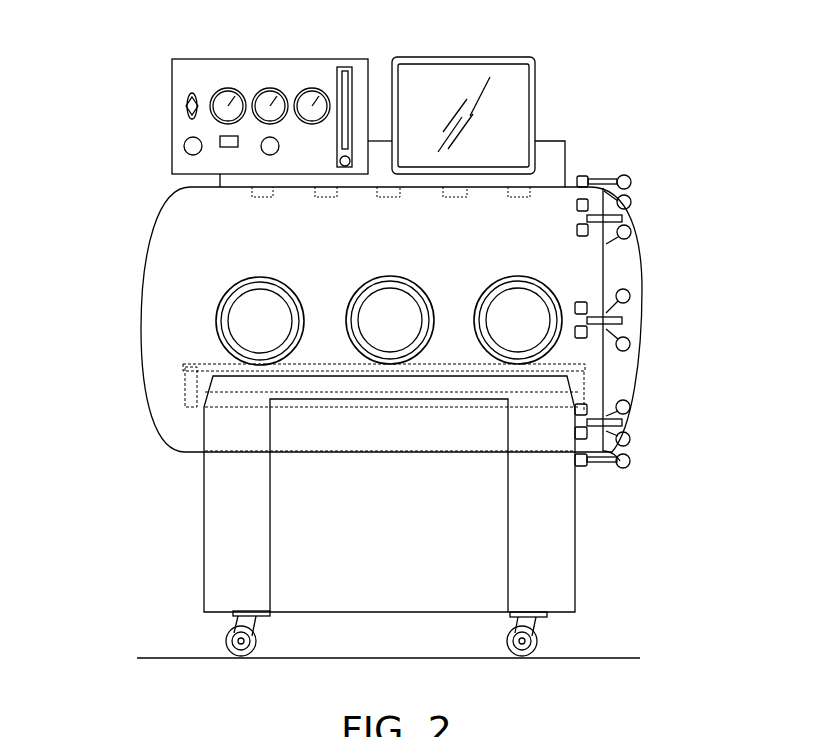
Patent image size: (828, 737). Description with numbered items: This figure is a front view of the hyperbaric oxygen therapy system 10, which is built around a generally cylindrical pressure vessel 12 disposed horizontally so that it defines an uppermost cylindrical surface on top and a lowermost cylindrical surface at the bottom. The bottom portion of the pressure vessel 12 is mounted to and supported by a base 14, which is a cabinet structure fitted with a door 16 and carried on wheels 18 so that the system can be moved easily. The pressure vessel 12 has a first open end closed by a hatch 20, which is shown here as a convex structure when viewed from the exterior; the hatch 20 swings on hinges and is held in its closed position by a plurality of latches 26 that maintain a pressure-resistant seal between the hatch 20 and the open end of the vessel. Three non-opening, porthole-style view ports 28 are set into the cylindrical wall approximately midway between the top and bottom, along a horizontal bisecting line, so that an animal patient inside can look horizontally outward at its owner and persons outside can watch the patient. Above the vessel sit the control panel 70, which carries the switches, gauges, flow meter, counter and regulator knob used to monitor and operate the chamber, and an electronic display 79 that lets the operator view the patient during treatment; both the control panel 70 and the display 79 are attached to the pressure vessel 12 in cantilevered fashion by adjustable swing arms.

The hyperbaric oxygen therapy system 10 is at (100, 89).
The pressure vessel 12 is at (140, 358).
The base 14 is at (575, 560).
The door 16 is at (404, 552).
The wheels 18 is at (228, 654).
The hatch 20 is at (642, 257).
The latches 26 is at (632, 178).
The view ports 28 is at (251, 280).
The control panel 70 is at (220, 60).
The electronic display 79 is at (470, 58).